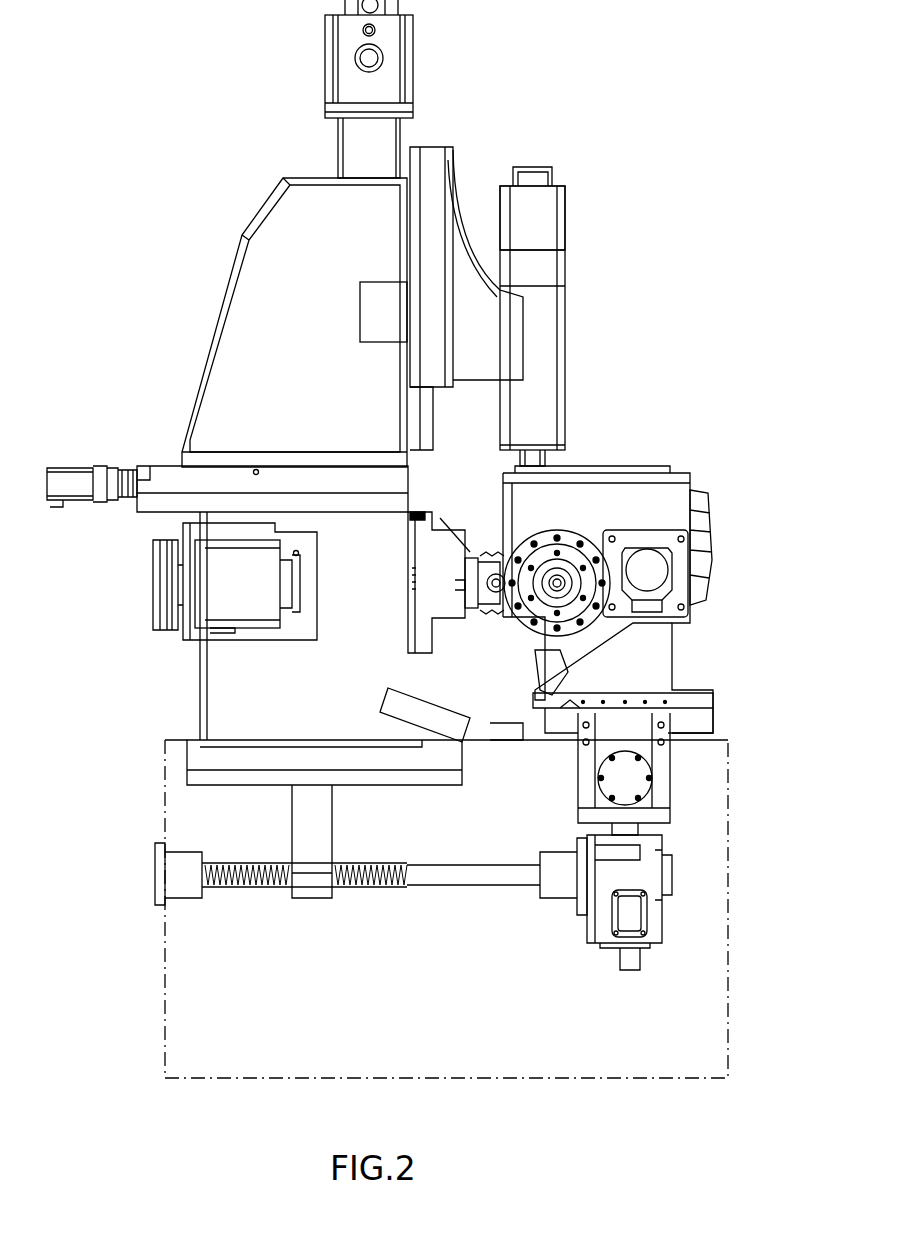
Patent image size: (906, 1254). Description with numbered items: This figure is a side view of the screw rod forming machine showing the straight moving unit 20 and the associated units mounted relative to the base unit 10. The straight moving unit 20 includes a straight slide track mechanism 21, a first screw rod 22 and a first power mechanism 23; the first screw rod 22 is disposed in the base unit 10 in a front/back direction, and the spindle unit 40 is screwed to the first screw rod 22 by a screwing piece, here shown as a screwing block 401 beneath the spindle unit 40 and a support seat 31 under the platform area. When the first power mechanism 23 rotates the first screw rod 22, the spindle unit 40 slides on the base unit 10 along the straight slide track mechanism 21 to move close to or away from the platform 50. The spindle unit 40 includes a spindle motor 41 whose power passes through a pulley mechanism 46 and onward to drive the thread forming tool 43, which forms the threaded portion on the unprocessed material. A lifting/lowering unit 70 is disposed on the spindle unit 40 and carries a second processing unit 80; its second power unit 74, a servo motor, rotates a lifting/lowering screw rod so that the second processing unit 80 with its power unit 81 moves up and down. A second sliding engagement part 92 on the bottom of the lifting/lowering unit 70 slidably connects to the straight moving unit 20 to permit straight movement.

The base unit 10 is at (175, 965).
The straight moving unit 20 is at (495, 993).
The straight slide track mechanism 21 is at (503, 742).
The first screw rod 22 is at (372, 888).
The first power mechanism 23 is at (630, 915).
The support seat 31 is at (672, 728).
The spindle unit 40 is at (205, 690).
The slide block 401 is at (318, 823).
The spindle motor 41 is at (235, 582).
The thread forming tool 43 is at (497, 612).
The pulley mechanism 46 is at (155, 575).
The platform 50 is at (668, 668).
The lifting/lowering unit 70 is at (315, 210).
The second power unit 74 is at (385, 94).
The second processing unit 80 is at (568, 330).
The power unit 81 is at (530, 205).
The second sliding engagement part 92 is at (422, 512).